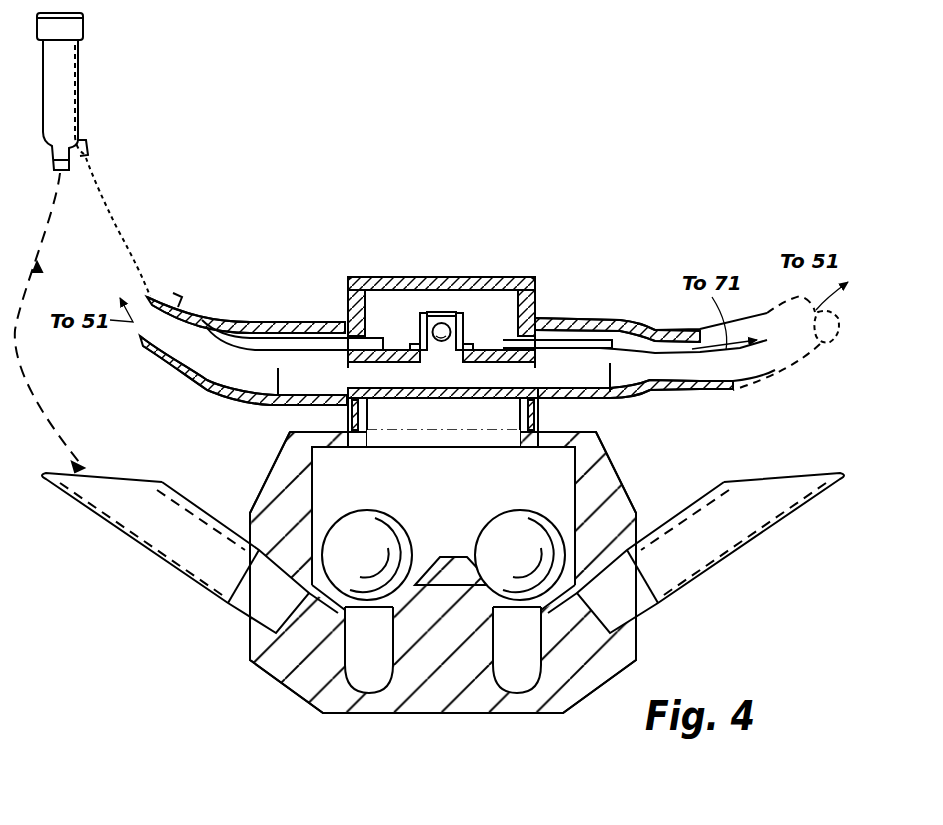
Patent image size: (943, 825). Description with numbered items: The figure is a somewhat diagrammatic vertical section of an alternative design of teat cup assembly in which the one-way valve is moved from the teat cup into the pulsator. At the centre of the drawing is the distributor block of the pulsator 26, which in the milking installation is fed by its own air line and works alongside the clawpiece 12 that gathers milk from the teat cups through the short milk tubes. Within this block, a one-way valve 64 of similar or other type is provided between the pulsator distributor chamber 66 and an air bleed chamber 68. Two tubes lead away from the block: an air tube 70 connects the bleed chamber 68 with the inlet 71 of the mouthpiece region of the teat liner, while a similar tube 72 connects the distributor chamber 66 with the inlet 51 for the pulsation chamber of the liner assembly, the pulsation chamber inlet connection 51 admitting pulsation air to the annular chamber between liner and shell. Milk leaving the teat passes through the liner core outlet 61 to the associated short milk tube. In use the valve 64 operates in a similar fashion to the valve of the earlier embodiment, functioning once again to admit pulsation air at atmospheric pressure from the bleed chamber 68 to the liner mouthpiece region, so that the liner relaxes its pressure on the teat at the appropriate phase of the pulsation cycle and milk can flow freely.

The clawpiece 12 is at (190, 632).
The pulsator 26 is at (384, 240).
The pulsation chamber inlet connection 51 is at (92, 147).
The liner core outlet 61 is at (56, 169).
The one-way valve 64 is at (445, 505).
The pulsator distributor chamber 66 is at (568, 350).
The air bleed chamber 68 is at (497, 297).
The air tube 70 is at (240, 343).
The inlet of the mouthpiece region 71 is at (80, 34).
The tube 72 is at (223, 392).